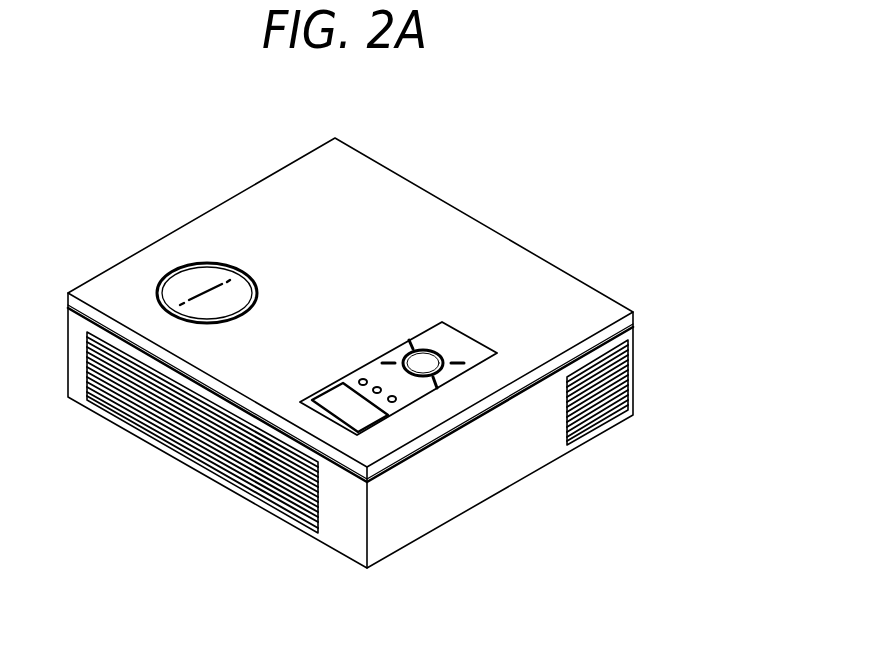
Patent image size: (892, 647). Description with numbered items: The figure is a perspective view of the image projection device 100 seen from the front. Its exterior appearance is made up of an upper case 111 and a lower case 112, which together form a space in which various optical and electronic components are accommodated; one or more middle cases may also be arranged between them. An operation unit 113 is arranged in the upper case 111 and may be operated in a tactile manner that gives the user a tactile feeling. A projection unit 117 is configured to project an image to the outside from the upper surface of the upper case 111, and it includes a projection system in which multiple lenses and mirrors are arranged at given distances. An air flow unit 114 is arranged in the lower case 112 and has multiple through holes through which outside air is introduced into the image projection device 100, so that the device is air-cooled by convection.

The image projection device 100 is at (518, 220).
The upper case 111 is at (630, 320).
The lower case 112 is at (630, 365).
The operation unit 113 is at (424, 403).
The air flow unit 114 is at (207, 460).
The projection unit 117 is at (192, 285).